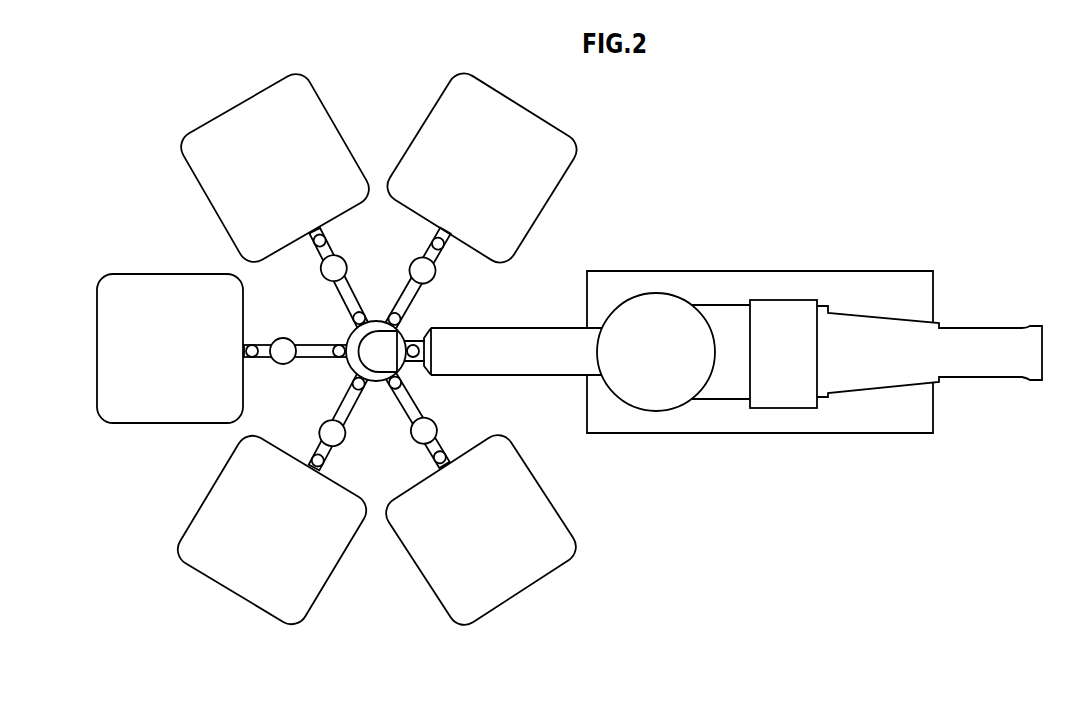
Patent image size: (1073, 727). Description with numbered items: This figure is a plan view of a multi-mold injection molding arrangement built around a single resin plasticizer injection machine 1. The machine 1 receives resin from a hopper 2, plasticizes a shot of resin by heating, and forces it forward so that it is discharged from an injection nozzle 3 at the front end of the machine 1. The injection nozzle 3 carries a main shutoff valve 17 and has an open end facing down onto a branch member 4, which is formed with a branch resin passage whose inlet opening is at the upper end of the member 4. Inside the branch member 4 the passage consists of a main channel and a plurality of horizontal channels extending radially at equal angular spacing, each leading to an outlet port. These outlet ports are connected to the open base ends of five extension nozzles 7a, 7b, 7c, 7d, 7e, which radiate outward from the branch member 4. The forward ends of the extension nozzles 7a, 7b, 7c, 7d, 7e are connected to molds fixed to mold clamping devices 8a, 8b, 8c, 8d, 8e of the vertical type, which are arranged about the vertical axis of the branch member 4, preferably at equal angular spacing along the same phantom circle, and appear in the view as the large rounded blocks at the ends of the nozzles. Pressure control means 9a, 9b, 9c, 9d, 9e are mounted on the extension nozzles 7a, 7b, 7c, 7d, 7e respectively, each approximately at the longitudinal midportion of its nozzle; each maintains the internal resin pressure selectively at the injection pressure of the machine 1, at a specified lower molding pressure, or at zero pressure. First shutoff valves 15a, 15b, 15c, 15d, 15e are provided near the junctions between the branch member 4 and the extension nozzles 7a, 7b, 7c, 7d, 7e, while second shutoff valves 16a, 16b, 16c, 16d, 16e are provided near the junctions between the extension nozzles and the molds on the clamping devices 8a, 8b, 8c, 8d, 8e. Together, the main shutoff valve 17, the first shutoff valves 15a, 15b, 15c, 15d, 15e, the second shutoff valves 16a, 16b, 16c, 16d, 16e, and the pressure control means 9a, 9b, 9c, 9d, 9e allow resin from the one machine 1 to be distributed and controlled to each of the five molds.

The resin plasticizer injection machine 1 is at (857, 340).
The hopper 2 is at (656, 306).
The injection nozzle 3 is at (432, 358).
The branch member 4 is at (349, 364).
The extension nozzle 7a is at (432, 247).
The extension nozzle 7b is at (319, 258).
The extension nozzle 7c is at (263, 362).
The extension nozzle 7d is at (348, 415).
The extension nozzle 7e is at (413, 405).
The mold clamping device 8a is at (515, 216).
The mold clamping device 8b is at (321, 142).
The mold clamping device 8c is at (156, 290).
The mold clamping device 8d is at (224, 516).
The mold clamping device 8e is at (433, 568).
The pressure control means 9a is at (428, 272).
The pressure control means 9b is at (352, 261).
The pressure control means 9c is at (284, 343).
The pressure control means 9d is at (328, 427).
The pressure control means 9e is at (414, 431).
The first shutoff valve 15a is at (402, 315).
The first shutoff valve 15b is at (363, 316).
The first shutoff valve 15c is at (338, 346).
The first shutoff valve 15d is at (358, 386).
The first shutoff valve 15e is at (396, 391).
The second shutoff valve 16a is at (443, 247).
The second shutoff valve 16b is at (325, 236).
The second shutoff valve 16c is at (252, 345).
The second shutoff valve 16d is at (313, 455).
The second shutoff valve 16e is at (426, 466).
The main shutoff valve 17 is at (418, 341).